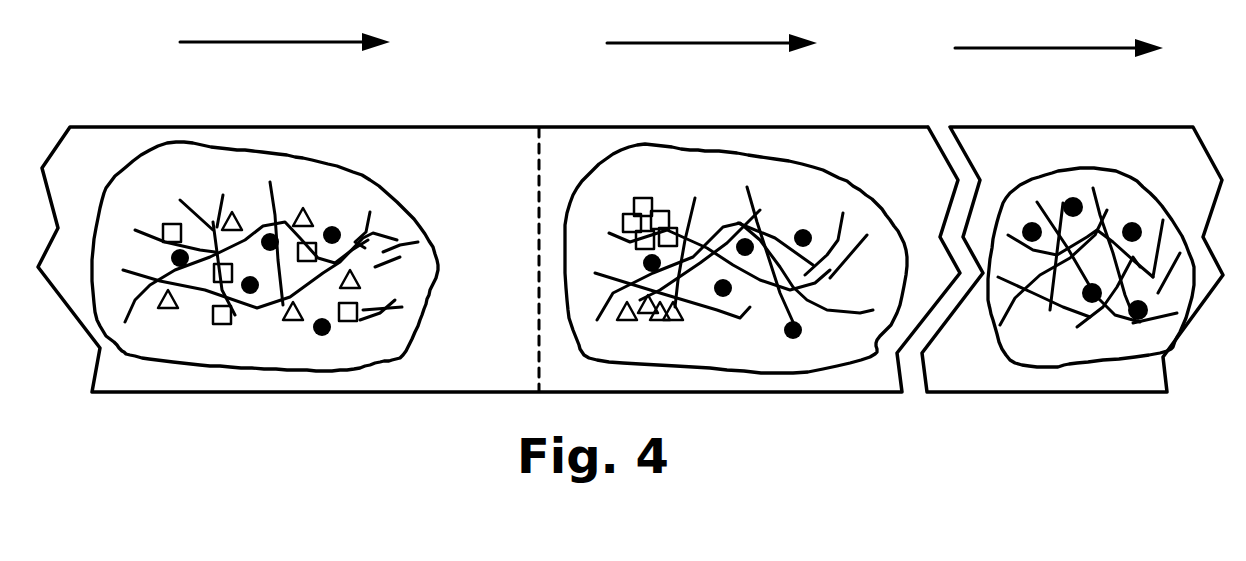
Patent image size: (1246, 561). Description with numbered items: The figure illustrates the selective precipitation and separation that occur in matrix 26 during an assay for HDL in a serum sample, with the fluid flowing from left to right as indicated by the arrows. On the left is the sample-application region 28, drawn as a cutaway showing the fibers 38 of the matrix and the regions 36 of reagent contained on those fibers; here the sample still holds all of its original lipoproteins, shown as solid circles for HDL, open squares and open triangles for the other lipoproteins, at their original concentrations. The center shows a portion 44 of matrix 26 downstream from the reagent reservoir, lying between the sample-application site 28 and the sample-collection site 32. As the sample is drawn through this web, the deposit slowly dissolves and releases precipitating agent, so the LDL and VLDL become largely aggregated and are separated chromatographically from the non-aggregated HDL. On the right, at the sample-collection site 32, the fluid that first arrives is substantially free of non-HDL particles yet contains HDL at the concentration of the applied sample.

The matrix 26 is at (283, 392).
The sample-application region 28 is at (263, 160).
The regions of reagent 36 is at (210, 227).
The fibers 38 is at (380, 313).
The portion of matrix 44 is at (730, 170).
The sample-collection site 32 is at (1075, 182).